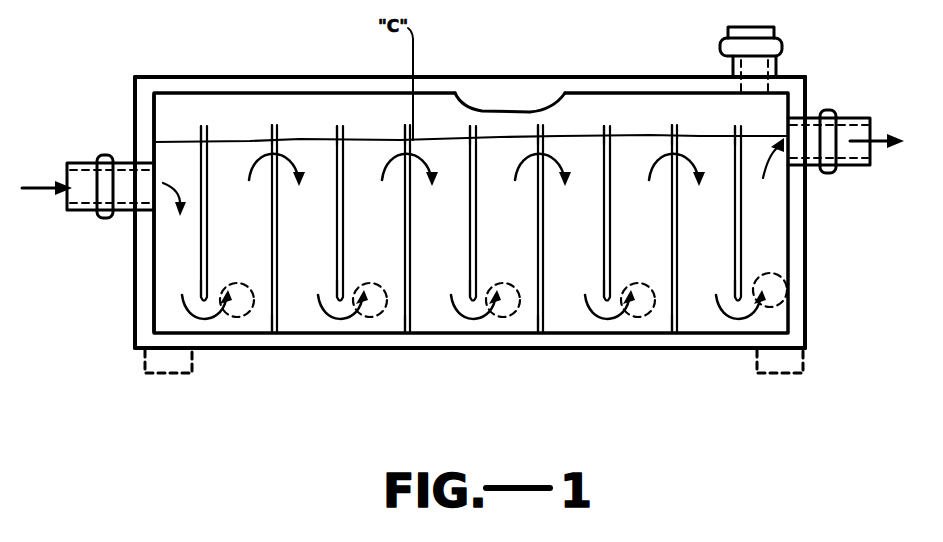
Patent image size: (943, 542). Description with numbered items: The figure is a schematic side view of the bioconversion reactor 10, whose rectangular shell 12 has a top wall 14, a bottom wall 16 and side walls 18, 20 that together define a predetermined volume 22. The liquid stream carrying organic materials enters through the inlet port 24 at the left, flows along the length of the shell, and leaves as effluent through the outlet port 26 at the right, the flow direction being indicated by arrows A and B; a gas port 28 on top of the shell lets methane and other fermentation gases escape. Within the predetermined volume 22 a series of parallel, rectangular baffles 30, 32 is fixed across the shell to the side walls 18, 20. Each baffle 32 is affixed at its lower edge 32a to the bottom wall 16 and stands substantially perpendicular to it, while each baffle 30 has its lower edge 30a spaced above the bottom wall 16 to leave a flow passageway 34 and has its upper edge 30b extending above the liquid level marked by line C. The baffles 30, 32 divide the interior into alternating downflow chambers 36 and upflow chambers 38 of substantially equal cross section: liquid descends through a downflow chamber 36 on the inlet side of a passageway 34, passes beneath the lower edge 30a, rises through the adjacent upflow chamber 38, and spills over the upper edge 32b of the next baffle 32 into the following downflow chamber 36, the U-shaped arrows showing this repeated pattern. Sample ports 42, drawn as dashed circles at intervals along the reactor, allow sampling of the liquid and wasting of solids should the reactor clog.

The bioconversion reactor 10 is at (300, 64).
The shell 12 is at (433, 77).
The top wall 14 is at (638, 77).
The bottom wall 16 is at (610, 345).
The side wall 18 is at (518, 90).
The side wall 20 is at (186, 100).
The predetermined volume 22 is at (150, 232).
The inlet port 24 is at (73, 165).
The outlet port 26 is at (856, 128).
The gas port 28 is at (752, 36).
The baffle 30 is at (208, 126).
The lower edge of baffle 30 30a is at (446, 283).
The upper edge of baffle 30 30b is at (204, 132).
The baffle 32 is at (279, 318).
The lower edge of baffle 32 32a is at (270, 320).
The upper edge of baffle 32 32b is at (273, 135).
The flow passageway 34 is at (206, 326).
The downflow chamber 36 is at (190, 259).
The upflow chamber 38 is at (250, 259).
The sample port 42 is at (234, 317).